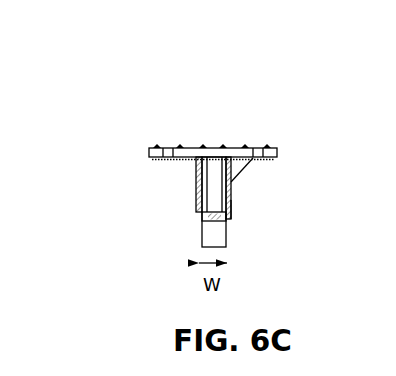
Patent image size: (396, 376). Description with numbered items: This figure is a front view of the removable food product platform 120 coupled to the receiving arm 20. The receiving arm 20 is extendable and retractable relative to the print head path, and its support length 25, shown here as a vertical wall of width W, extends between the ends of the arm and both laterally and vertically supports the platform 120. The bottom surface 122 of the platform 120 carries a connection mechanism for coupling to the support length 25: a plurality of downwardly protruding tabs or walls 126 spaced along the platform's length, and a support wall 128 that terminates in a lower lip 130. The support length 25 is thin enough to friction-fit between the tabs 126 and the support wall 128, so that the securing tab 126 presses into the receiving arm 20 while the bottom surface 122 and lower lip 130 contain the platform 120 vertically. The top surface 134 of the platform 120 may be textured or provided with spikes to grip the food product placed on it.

The food product platform 120 is at (189, 171).
The bottom surface 122 is at (165, 165).
The top surface 134 is at (192, 145).
The receiving arm 20 is at (212, 232).
The support length 25 is at (207, 195).
The downwardly protruding tabs 126 is at (200, 180).
The support wall 128 is at (232, 187).
The lower lip 130 is at (233, 218).